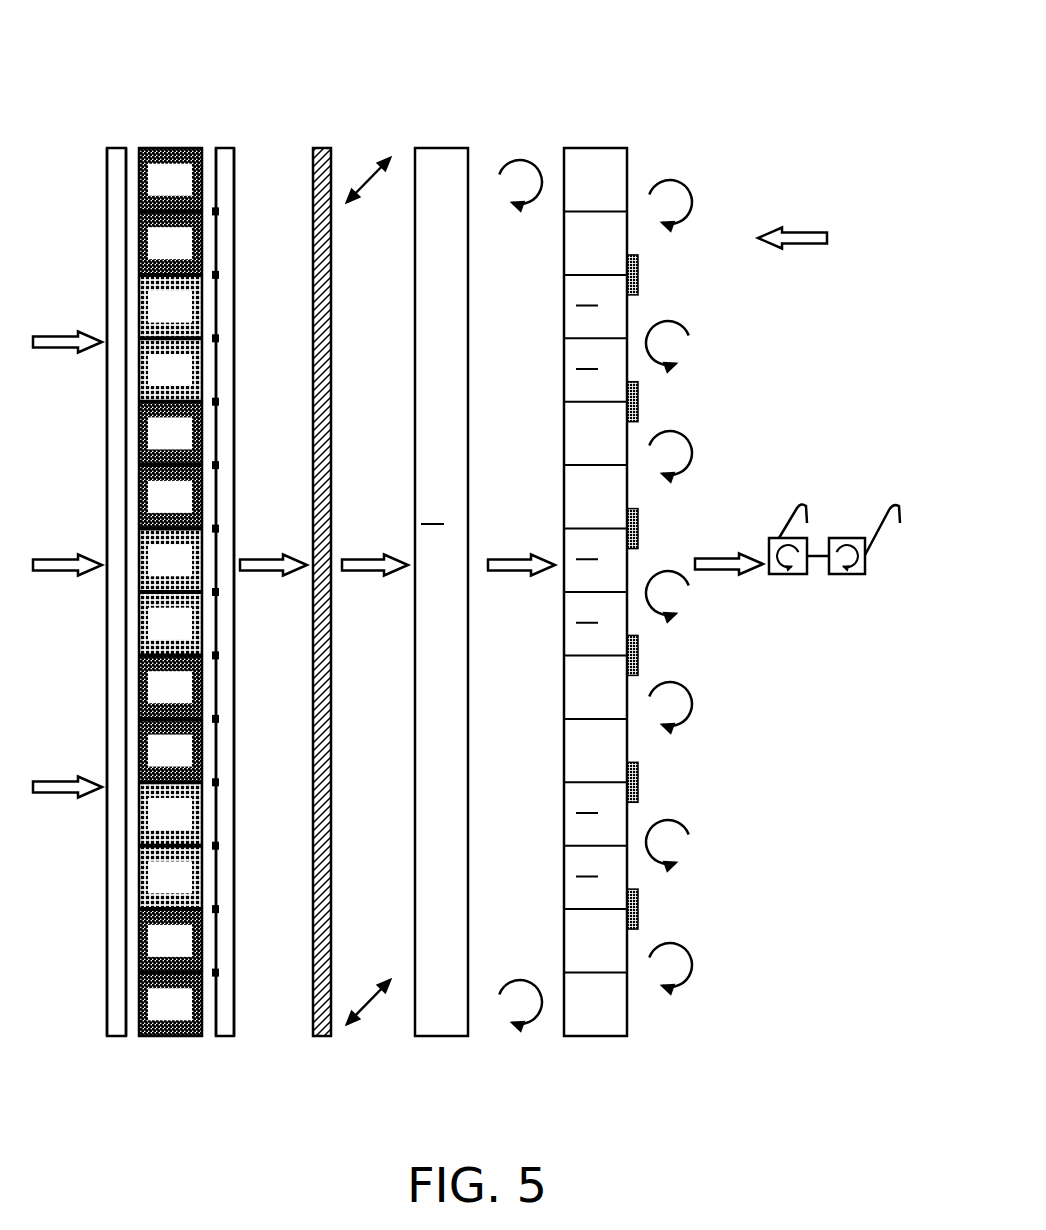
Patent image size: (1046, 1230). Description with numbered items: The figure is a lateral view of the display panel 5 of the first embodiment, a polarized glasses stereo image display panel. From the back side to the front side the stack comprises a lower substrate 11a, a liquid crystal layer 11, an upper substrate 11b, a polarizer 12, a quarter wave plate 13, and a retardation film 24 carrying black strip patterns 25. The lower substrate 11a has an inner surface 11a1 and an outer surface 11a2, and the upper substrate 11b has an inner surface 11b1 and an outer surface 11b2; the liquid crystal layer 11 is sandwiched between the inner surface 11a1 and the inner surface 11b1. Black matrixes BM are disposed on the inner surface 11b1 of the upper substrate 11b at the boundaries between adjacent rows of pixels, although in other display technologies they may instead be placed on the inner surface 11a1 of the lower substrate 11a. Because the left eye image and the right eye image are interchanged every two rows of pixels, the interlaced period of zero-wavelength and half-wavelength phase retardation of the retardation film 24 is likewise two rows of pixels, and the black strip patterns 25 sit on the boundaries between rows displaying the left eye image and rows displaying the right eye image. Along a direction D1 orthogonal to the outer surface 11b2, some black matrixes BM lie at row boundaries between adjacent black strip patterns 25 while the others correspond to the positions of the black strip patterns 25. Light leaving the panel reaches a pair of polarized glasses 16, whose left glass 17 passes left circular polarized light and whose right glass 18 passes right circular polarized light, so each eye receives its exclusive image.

The display panel 5 is at (778, 49).
The liquid crystal layer 11 is at (172, 148).
The lower substrate 11a is at (110, 148).
The inner surface of lower substrate 11a1 is at (128, 167).
The outer surface of lower substrate 11a2 is at (107, 190).
The upper substrate 11b is at (218, 148).
The inner surface of upper substrate 11b1 is at (216, 167).
The outer surface of upper substrate 11b2 is at (234, 190).
The black matrix BM is at (219, 275).
The polarizer 12 is at (322, 148).
The quarter wave plate 13 is at (437, 148).
The retardation film 24 is at (591, 148).
The black strip pattern 25 is at (640, 268).
The direction D1 is at (804, 230).
The polarized glasses 16 is at (804, 502).
The left glass 17 is at (845, 578).
The right glass 18 is at (790, 578).